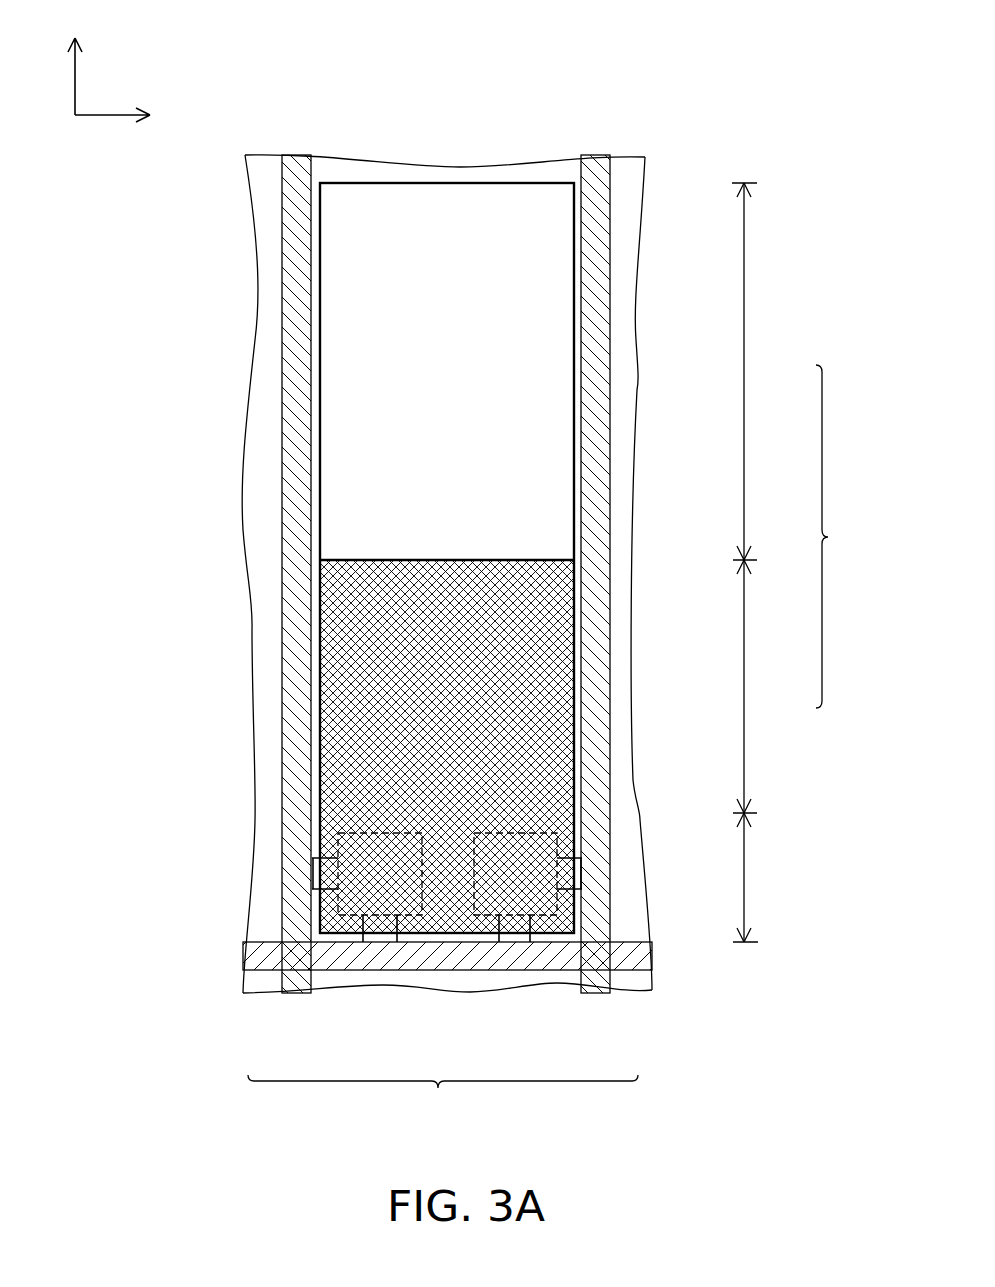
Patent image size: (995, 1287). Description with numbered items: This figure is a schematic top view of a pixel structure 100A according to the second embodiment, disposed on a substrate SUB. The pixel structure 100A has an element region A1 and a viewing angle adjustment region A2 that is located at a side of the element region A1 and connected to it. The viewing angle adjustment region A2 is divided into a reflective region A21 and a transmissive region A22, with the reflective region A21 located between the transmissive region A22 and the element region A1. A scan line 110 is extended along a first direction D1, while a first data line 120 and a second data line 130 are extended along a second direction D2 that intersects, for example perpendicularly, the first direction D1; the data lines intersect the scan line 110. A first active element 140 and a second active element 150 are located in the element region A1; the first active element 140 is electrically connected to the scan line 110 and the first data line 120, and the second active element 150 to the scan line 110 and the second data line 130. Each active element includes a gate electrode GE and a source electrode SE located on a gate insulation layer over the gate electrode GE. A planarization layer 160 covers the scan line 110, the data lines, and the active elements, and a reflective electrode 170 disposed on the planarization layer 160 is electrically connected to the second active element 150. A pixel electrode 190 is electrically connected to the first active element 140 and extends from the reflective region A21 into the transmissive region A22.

The substrate SUB is at (466, 167).
The scan line 110 is at (442, 953).
The first data line 120 is at (296, 988).
The second data line 130 is at (597, 963).
The first active element 140 is at (418, 940).
The second active element 150 is at (472, 940).
The planarization layer 160 is at (402, 940).
The reflective electrode 170 is at (490, 938).
The pixel electrode 190 is at (550, 350).
The source electrode SE is at (313, 880).
The gate electrode GE is at (362, 939).
The element region A1 is at (781, 880).
The viewing angle adjustment region A2 is at (798, 562).
The reflective region A21 is at (788, 700).
The transmissive region A22 is at (789, 375).
The pixel structure 100A is at (443, 1101).
The first direction D1 is at (129, 117).
The second direction D2 is at (74, 57).